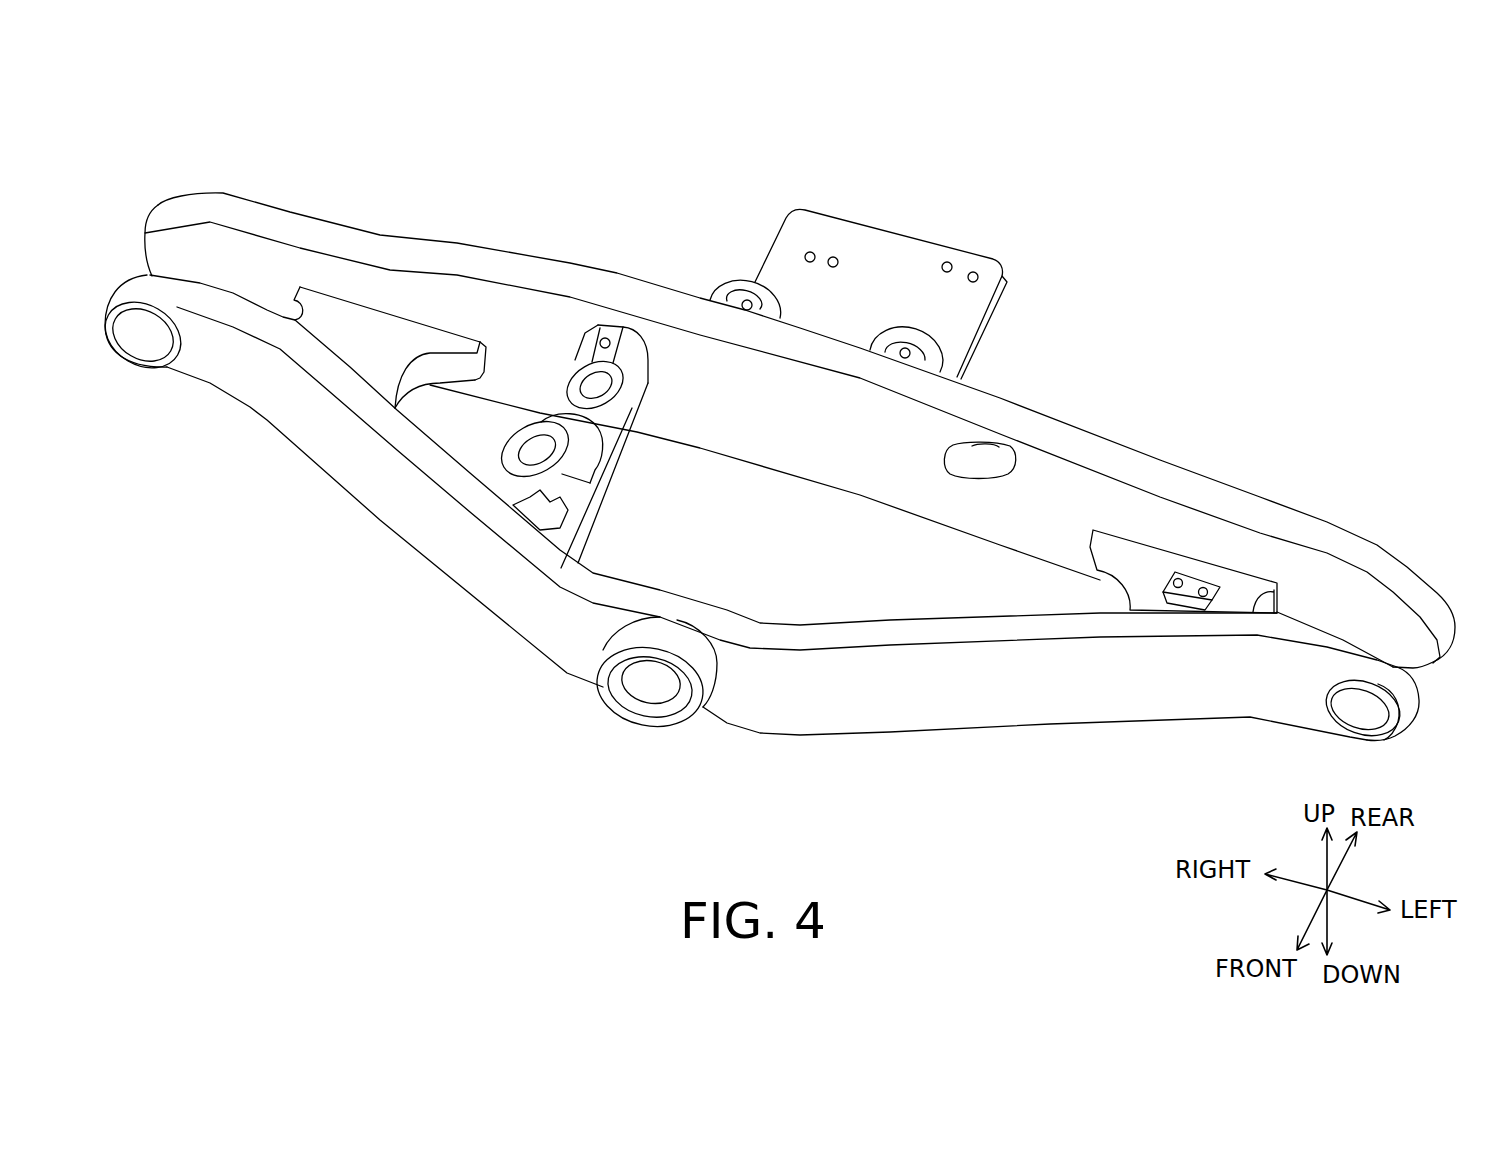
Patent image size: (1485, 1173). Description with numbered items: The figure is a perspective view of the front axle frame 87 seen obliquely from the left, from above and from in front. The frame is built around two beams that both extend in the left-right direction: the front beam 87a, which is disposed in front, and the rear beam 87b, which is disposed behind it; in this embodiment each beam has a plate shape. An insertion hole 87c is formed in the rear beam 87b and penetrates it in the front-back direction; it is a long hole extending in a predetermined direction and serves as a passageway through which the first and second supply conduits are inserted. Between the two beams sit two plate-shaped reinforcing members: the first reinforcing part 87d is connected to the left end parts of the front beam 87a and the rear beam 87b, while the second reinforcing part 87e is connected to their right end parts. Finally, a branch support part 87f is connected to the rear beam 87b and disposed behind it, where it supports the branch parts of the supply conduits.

The front axle frame 87 is at (481, 160).
The front beam 87a is at (513, 597).
The rear beam 87b is at (617, 280).
The insertion hole 87c is at (979, 474).
The first reinforcing part 87d is at (1157, 565).
The second reinforcing part 87e is at (357, 327).
The branch support part 87f is at (930, 257).